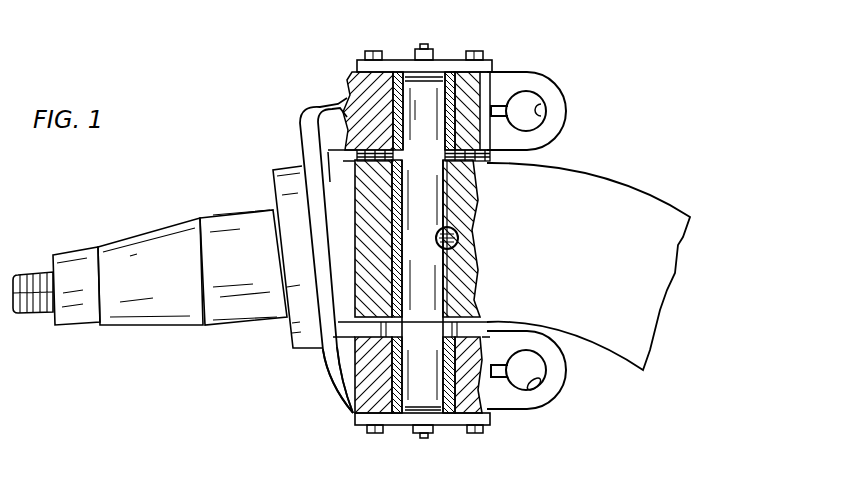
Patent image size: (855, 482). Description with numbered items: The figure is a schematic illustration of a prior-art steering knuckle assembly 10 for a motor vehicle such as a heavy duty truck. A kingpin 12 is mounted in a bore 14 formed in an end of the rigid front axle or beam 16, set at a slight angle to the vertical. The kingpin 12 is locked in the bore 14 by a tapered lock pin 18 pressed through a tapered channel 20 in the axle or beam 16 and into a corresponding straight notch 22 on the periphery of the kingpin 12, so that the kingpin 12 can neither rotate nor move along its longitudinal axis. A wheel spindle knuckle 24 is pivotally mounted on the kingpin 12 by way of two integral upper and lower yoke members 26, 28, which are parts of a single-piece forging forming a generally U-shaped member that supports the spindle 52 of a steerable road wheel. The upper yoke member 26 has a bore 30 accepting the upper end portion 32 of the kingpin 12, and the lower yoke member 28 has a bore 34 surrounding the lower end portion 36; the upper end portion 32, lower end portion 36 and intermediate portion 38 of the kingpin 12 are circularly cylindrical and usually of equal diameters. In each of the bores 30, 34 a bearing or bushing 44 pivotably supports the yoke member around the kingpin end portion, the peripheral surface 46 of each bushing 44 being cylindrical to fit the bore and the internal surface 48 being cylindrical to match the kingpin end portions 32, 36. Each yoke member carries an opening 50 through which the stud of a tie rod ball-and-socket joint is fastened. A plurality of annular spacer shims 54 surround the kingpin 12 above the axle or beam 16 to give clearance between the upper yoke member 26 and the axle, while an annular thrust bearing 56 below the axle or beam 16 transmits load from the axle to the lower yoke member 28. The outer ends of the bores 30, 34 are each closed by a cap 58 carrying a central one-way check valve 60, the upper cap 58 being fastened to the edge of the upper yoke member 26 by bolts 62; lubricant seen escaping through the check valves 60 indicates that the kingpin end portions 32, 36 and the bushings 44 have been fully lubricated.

The steering knuckle assembly 10 is at (283, 117).
The kingpin 12 is at (398, 218).
The bore 14 is at (399, 247).
The front axle or beam 16 is at (630, 352).
The tapered lock pin 18 is at (458, 237).
The tapered channel 20 is at (441, 230).
The straight notch 22 is at (459, 247).
The wheel spindle knuckle 24 is at (292, 140).
The upper yoke member 26 is at (342, 110).
The lower yoke member 28 is at (355, 410).
The upper yoke bore 30 is at (395, 103).
The upper end portion of the kingpin 32 is at (440, 98).
The lower yoke bore 34 is at (398, 368).
The lower end portion of the kingpin 36 is at (447, 427).
The intermediate portion of the kingpin 38 is at (398, 284).
The bearing or bushing 44 is at (392, 127).
The peripheral surface of the bushing 46 is at (483, 112).
The internal surface of the bushing 48 is at (424, 117).
The opening 50 is at (541, 110).
The spindle 52 is at (178, 328).
The annular spacer shims 54 is at (345, 155).
The annular thrust bearing 56 is at (482, 320).
The cap 58 is at (400, 55).
The one-way check valve 60 is at (428, 45).
The bolts 62 is at (378, 50).